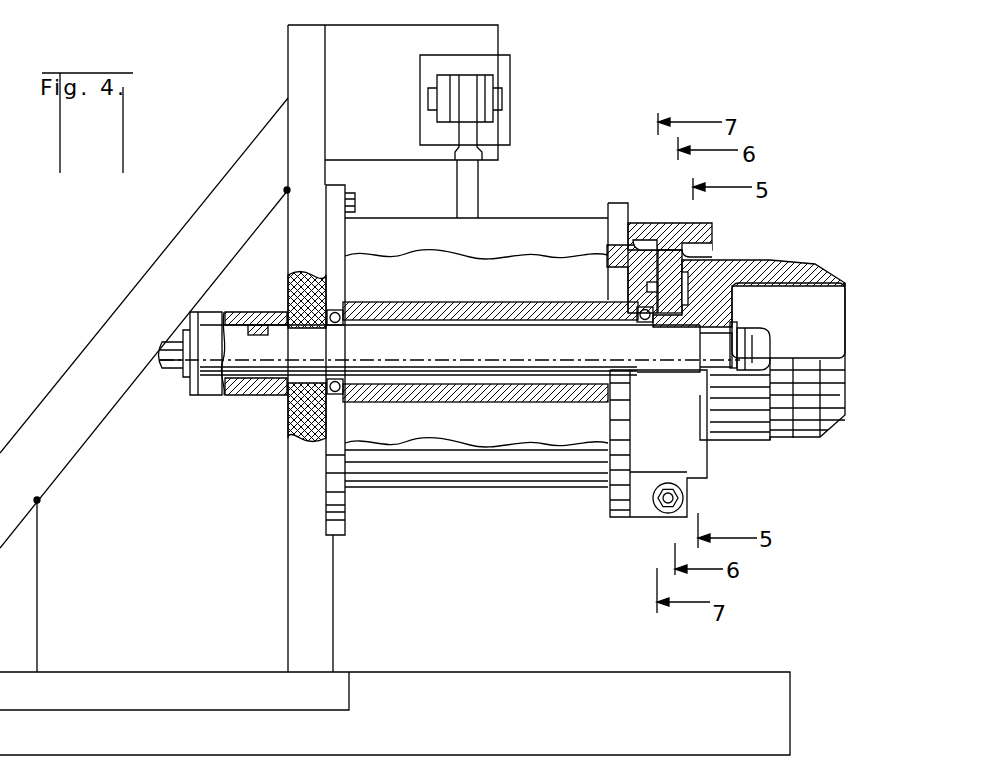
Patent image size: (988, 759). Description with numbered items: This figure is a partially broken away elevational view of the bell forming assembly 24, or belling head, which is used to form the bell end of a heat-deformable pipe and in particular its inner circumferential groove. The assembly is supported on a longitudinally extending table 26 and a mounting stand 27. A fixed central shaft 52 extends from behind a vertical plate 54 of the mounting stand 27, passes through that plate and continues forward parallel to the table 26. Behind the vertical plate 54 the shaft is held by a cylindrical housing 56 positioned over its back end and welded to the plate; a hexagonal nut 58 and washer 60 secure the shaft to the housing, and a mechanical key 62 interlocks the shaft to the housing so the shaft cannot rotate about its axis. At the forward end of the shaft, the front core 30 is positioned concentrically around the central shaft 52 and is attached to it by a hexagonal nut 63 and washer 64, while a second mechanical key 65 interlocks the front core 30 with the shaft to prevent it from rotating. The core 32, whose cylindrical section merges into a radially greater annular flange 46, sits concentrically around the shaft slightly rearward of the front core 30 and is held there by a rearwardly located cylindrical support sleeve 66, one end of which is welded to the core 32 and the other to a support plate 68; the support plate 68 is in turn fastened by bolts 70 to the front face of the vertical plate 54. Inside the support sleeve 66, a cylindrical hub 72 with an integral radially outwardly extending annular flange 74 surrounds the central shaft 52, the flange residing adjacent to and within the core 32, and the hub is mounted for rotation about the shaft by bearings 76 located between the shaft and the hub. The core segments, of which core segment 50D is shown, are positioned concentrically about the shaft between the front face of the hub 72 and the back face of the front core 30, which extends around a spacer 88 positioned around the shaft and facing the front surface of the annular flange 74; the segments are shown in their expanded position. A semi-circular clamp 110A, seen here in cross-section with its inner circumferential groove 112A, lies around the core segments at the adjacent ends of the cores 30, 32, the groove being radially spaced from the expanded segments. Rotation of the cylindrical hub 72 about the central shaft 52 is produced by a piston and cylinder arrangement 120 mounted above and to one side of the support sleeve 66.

The bell forming assembly 24 is at (560, 92).
The table 26 is at (560, 672).
The mounting stand 27 is at (190, 240).
The front core 30 is at (790, 260).
The core 32 is at (636, 249).
The annular flange 46 is at (612, 505).
The core segment 50D is at (660, 247).
The central shaft 52 is at (503, 356).
The vertical plate 54 is at (313, 178).
The cylindrical housing 56 is at (260, 397).
The hexagonal nut 58 is at (167, 372).
The washer 60 is at (185, 380).
The mechanical key 62 is at (258, 323).
The hexagonal nut 63 is at (771, 335).
The washer 64 is at (760, 322).
The second mechanical key 65 is at (713, 340).
The cylindrical support sleeve 66 is at (518, 228).
The support plate 68 is at (330, 245).
The bolts 70 is at (356, 202).
The cylindrical hub 72 is at (415, 402).
The annular flange 74 is at (630, 277).
The bearings 76 is at (337, 312).
The spacer 88 is at (733, 320).
The semi-circular clamp 110A is at (712, 228).
The inner circumferential groove 112A is at (712, 250).
The piston and cylinder arrangement 120 is at (415, 103).